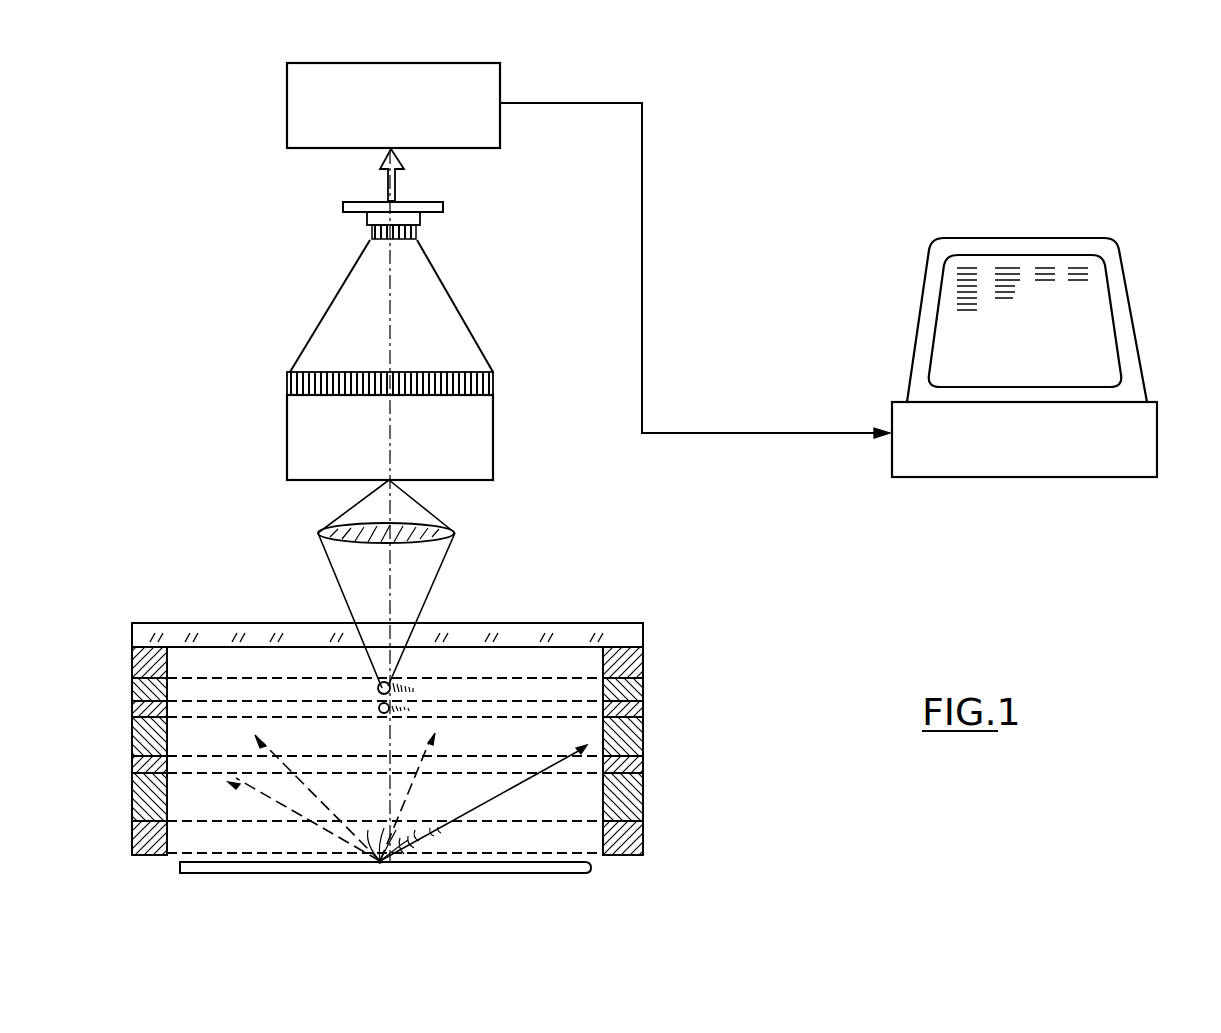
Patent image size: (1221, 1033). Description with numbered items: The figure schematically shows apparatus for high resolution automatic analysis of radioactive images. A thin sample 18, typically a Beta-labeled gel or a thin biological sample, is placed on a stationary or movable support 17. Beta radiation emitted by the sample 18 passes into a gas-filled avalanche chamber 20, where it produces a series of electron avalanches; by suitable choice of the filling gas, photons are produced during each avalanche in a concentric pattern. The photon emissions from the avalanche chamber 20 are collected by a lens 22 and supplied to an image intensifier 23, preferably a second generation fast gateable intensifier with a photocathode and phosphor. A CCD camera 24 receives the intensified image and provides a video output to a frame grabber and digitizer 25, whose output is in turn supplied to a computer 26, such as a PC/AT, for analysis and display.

The support 17 is at (591, 873).
The sample 18 is at (380, 861).
The avalanche chamber 20 is at (687, 690).
The lens 22 is at (455, 533).
The image intensifier 23 is at (493, 443).
The CCD camera 24 is at (443, 210).
The frame grabber and digitizer 25 is at (500, 78).
The computer 26 is at (1157, 440).